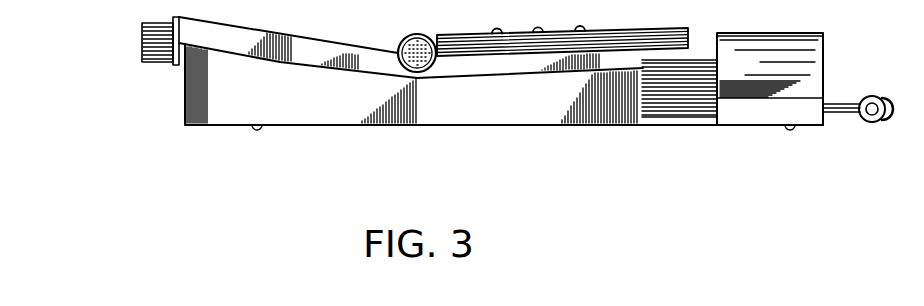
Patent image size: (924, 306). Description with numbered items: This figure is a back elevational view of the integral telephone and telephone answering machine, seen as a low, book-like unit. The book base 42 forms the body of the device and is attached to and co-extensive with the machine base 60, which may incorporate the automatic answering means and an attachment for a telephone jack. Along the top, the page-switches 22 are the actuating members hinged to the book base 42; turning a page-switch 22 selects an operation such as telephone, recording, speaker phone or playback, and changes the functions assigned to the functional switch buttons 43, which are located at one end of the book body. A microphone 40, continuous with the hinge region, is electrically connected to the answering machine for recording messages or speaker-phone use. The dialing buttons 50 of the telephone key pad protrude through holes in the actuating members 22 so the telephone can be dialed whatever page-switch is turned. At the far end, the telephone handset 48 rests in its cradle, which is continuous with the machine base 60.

The page-switch 22 is at (607, 30).
The microphone 40 is at (420, 73).
The book base 42 is at (297, 52).
The functional switch buttons 43 is at (142, 27).
The telephone handset 48 is at (823, 56).
The dialing buttons 50 is at (497, 36).
The machine base 60 is at (337, 105).